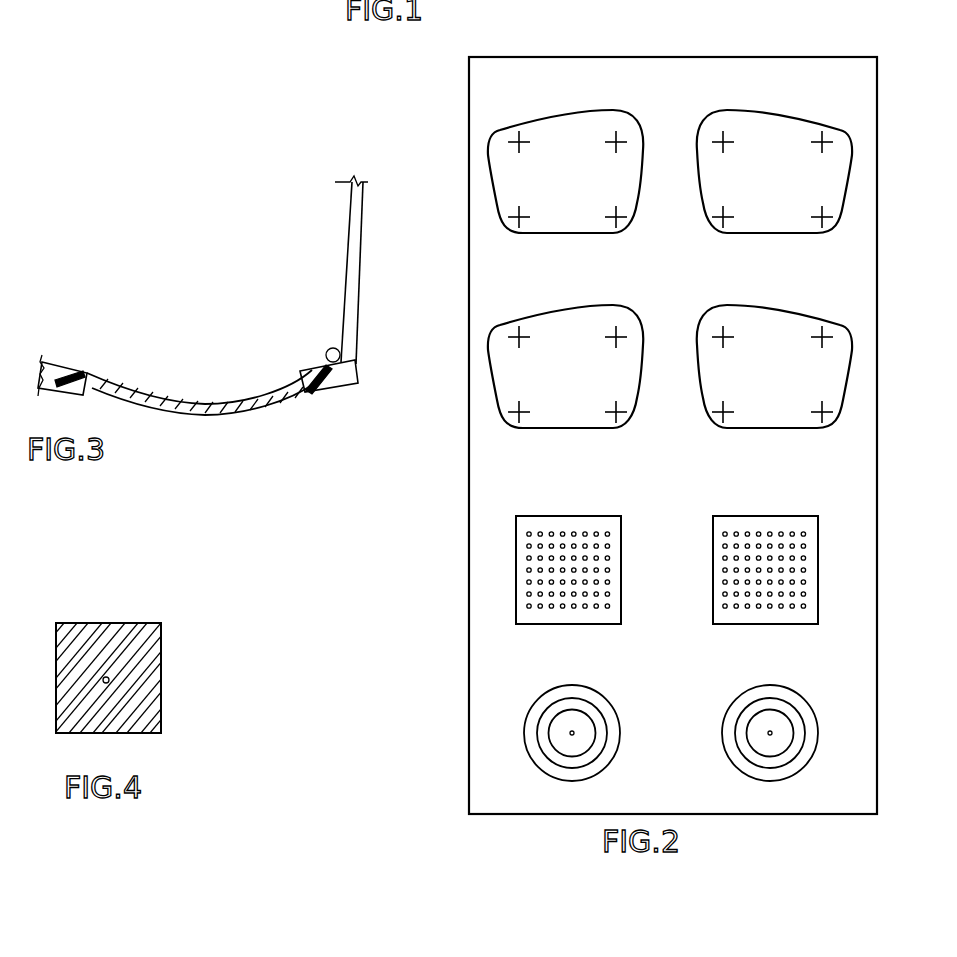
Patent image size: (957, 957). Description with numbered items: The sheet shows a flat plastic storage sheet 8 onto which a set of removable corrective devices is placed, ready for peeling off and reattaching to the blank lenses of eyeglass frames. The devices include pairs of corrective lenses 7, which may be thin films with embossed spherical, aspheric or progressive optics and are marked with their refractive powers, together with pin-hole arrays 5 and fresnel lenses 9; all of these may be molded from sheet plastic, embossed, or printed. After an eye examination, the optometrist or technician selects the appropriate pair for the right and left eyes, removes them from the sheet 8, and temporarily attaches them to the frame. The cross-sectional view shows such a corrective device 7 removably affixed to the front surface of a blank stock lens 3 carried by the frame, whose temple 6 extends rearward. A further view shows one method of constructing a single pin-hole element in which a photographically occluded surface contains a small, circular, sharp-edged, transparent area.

In FIG. 3, the blank stock lens 3 is at (175, 392).
In FIG. 2, the pin-hole arrays 5 is at (520, 529).
In FIG. 3, the temple 6 is at (357, 222).
In FIG. 2, the corrective lenses 7 is at (715, 308).
In FIG. 3, the corrective lenses 7 is at (202, 412).
In FIG. 4, the corrective lenses 7 is at (121, 678).
In FIG. 2, the flat plastic storage sheet 8 is at (852, 67).
In FIG. 2, the fresnel lenses 9 is at (590, 693).